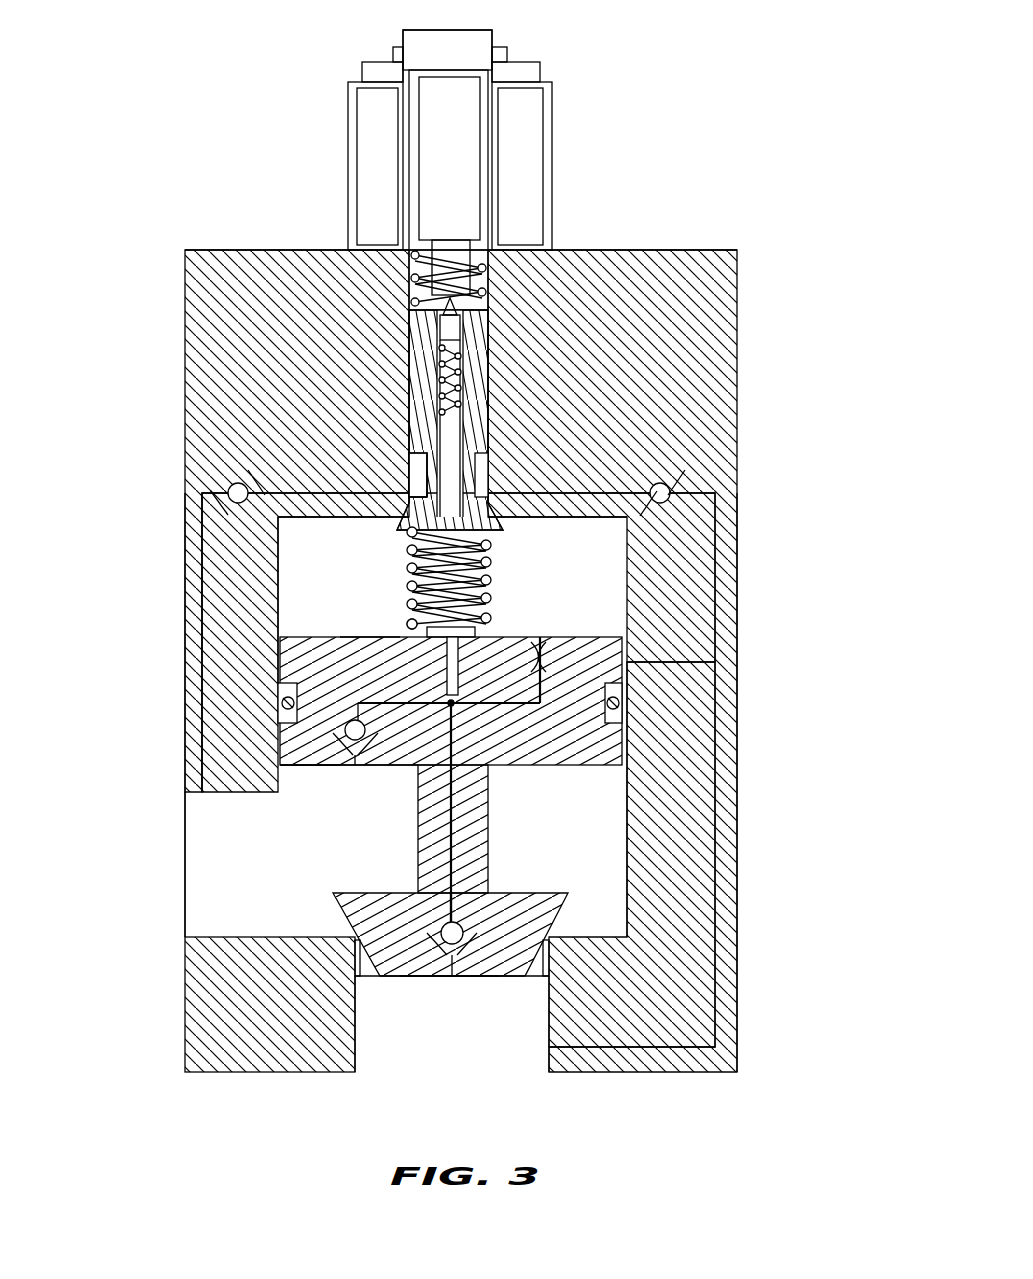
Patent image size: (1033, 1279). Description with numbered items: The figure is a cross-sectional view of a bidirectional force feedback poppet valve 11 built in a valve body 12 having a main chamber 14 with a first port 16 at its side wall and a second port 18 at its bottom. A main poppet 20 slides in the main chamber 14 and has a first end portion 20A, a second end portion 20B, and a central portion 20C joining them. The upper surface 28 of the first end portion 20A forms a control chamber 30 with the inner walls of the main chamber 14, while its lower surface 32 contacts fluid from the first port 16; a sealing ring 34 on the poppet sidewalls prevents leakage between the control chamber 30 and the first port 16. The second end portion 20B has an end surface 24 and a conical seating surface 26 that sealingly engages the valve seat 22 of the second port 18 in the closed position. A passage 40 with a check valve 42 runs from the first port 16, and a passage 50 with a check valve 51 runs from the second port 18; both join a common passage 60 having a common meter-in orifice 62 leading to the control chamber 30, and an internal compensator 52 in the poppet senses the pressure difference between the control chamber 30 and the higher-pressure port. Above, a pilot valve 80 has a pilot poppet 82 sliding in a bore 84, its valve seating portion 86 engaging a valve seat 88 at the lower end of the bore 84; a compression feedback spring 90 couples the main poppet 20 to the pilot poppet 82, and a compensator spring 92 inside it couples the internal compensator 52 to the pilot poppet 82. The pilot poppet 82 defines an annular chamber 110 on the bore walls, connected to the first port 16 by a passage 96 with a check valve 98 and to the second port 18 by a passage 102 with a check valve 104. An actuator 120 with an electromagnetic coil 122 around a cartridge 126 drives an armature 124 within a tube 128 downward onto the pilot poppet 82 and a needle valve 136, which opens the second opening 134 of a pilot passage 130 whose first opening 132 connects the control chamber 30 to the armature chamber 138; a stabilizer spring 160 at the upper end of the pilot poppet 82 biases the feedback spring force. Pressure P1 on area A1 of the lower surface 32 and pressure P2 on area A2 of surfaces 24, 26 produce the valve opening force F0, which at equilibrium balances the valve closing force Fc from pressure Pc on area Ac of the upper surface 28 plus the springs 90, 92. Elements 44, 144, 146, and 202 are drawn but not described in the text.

The bidirectional force feedback poppet valve 11 is at (648, 58).
The valve body 12 is at (680, 400).
The main chamber 14 is at (716, 662).
The first port 16 is at (163, 856).
The second port 18 is at (520, 1025).
The main poppet 20 is at (716, 772).
The first end portion 20A is at (512, 645).
The second end portion 20B is at (512, 900).
The central portion 20C is at (470, 800).
The valve seat 22 is at (356, 940).
The end surface 24 is at (408, 1020).
The seating surface 26 is at (372, 1010).
The upper surface 28 is at (280, 625).
The control chamber 30 is at (716, 610).
The lower surface 32 is at (370, 795).
The sealing ring 34 is at (286, 703).
The passage 40 is at (362, 692).
The check valve 42 is at (366, 726).
The piston seal 44 is at (300, 742).
The first passage 50 is at (475, 840).
The check valve 51 is at (440, 922).
The internal compensator 52 is at (440, 680).
The common passage 60 is at (510, 705).
The common meter-in orifice 62 is at (580, 640).
The pilot valve 80 is at (403, 417).
The pilot poppet 82 is at (424, 430).
The bore 84 is at (418, 385).
The valve seating portion 86 is at (500, 522).
The valve seat 88 is at (500, 492).
The compression feedback spring 90 is at (408, 560).
The compensator spring 92 is at (410, 600).
The passage 96 is at (200, 592).
The check valve 98 is at (226, 482).
The passage 102 is at (740, 512).
The check valve 104 is at (672, 480).
The annular chamber 110 is at (490, 462).
The actuator 120 is at (488, 50).
The electromagnetic coil 122 is at (364, 218).
The armature 124 is at (430, 116).
The cartridge 126 is at (402, 54).
The tube 128 is at (390, 130).
The pilot passage 130 is at (486, 396).
The first opening 132 is at (413, 542).
The second opening 134 is at (470, 318).
The needle valve 136 is at (432, 322).
The armature chamber 138 is at (495, 225).
The pin shaft 144 is at (480, 322).
The pin spring 146 is at (440, 350).
The stabilizer spring 160 is at (410, 265).
The sleeve outer wall 202 is at (280, 716).
The effective surface area A1 is at (316, 772).
The effective surface area A2 is at (440, 985).
The effective surface area Ac is at (382, 634).
The valve closing force Fc is at (583, 520).
The valve opening force F0 is at (607, 772).
The fluid pressure P1 is at (299, 863).
The fluid pressure P2 is at (495, 1024).
The fluid pressure Pc is at (512, 570).